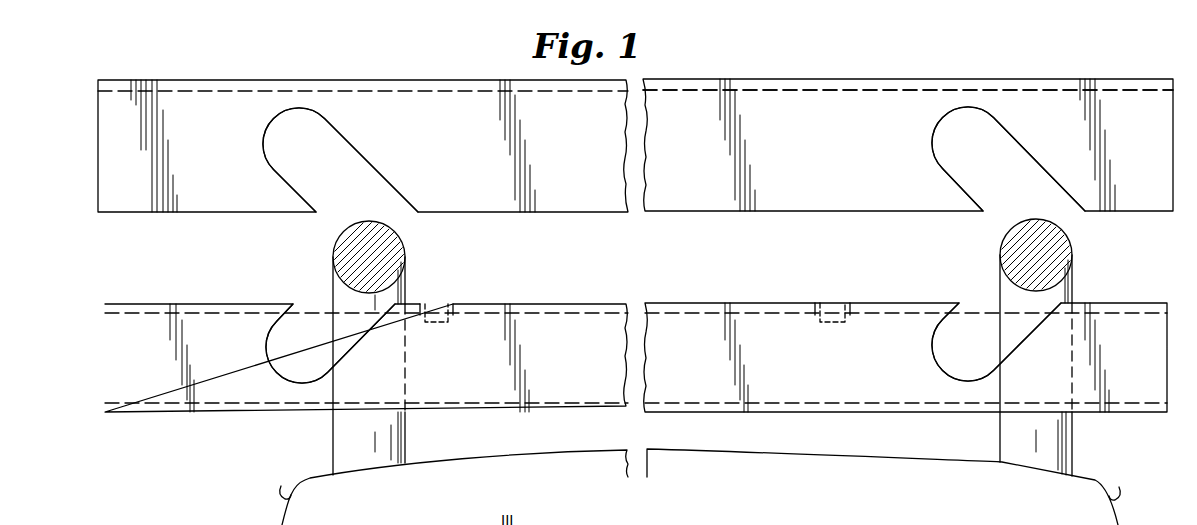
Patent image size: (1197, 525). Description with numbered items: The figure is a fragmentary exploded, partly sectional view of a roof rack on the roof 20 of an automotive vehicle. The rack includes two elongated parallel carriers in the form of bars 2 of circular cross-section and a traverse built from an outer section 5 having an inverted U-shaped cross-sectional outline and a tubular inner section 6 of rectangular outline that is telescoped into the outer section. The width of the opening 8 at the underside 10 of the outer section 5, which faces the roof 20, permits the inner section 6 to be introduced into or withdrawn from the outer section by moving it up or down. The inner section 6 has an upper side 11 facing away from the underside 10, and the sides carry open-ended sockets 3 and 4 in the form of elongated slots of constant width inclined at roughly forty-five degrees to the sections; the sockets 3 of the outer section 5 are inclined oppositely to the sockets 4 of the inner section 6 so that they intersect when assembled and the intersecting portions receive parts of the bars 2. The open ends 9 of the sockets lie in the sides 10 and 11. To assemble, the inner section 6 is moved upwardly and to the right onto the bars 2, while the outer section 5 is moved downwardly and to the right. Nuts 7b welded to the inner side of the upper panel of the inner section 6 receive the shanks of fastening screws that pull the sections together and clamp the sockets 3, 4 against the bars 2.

The carrier bar 2 is at (395, 247).
The socket 3 is at (343, 188).
The socket 4 is at (322, 357).
The outer section 5 is at (740, 79).
The inner section 6 is at (788, 412).
The nut 7b is at (440, 325).
The opening 8 is at (816, 214).
The open end 9 is at (336, 207).
The underside 10 is at (458, 213).
The upper side 11 is at (473, 304).
The roof 20 is at (1100, 477).